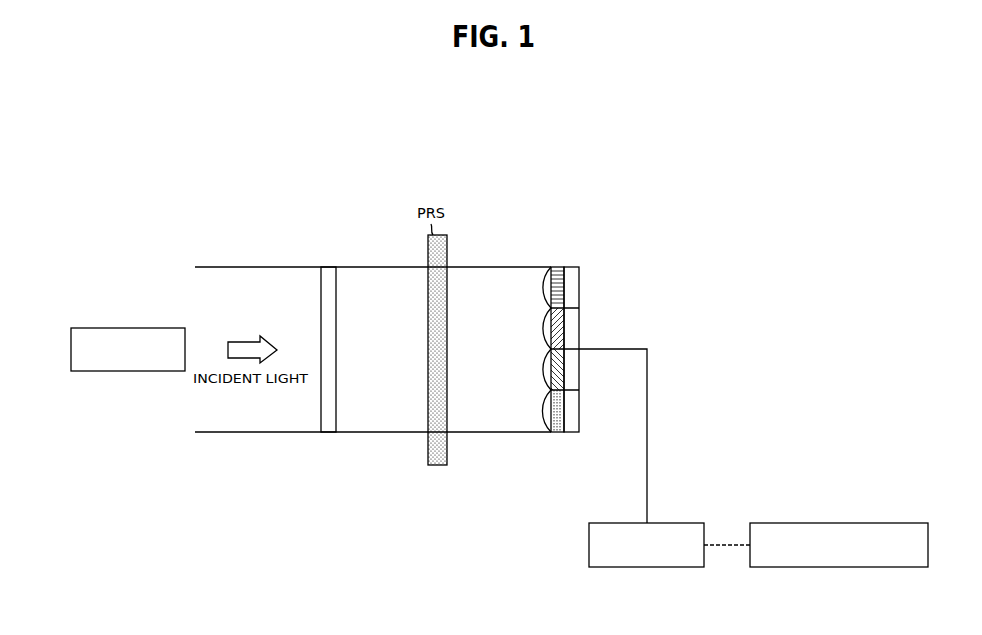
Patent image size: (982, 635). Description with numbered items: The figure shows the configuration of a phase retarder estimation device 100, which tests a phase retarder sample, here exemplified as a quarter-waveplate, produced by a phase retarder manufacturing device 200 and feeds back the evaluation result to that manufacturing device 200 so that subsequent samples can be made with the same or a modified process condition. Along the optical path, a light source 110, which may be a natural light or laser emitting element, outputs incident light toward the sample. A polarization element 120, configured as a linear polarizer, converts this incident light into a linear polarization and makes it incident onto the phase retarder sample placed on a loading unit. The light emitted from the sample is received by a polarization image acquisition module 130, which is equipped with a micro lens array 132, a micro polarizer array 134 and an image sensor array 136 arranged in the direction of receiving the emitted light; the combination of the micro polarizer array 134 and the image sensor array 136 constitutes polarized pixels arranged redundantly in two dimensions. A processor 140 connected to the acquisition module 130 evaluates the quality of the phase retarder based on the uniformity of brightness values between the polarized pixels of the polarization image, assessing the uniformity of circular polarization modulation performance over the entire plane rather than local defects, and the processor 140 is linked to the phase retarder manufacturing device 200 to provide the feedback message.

The phase retarder estimation device 100 is at (468, 200).
The light source 110 is at (113, 328).
The polarization element 120 is at (329, 267).
The polarization image acquisition module 130 is at (600, 260).
The micro lens array 132 is at (545, 278).
The micro polarizer array 134 is at (558, 267).
The image sensor array 136 is at (580, 278).
The processor 140 is at (688, 523).
The phase retarder manufacturing device 200 is at (914, 523).